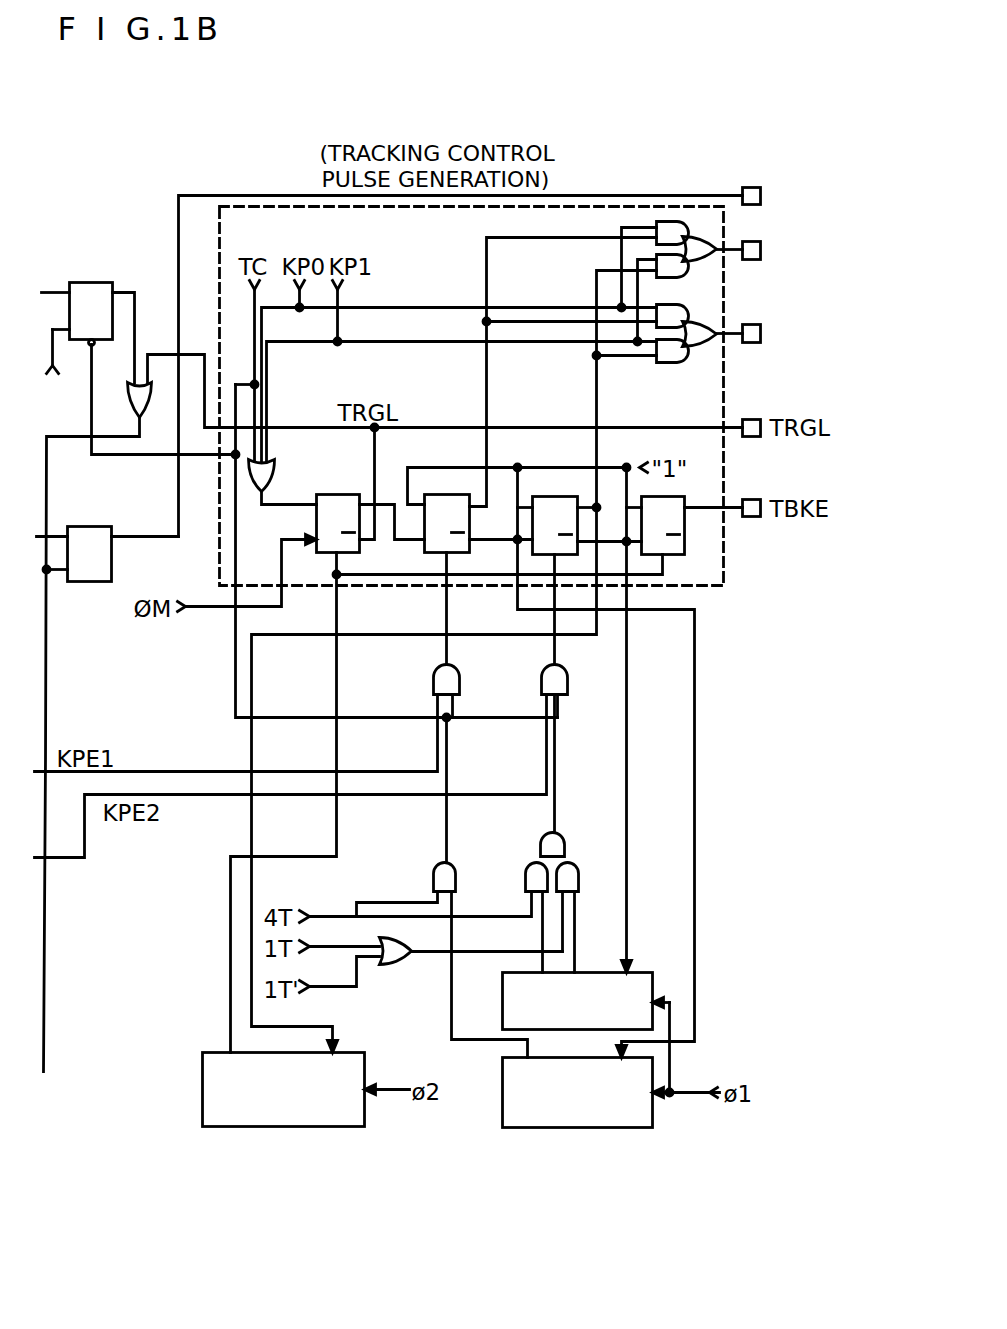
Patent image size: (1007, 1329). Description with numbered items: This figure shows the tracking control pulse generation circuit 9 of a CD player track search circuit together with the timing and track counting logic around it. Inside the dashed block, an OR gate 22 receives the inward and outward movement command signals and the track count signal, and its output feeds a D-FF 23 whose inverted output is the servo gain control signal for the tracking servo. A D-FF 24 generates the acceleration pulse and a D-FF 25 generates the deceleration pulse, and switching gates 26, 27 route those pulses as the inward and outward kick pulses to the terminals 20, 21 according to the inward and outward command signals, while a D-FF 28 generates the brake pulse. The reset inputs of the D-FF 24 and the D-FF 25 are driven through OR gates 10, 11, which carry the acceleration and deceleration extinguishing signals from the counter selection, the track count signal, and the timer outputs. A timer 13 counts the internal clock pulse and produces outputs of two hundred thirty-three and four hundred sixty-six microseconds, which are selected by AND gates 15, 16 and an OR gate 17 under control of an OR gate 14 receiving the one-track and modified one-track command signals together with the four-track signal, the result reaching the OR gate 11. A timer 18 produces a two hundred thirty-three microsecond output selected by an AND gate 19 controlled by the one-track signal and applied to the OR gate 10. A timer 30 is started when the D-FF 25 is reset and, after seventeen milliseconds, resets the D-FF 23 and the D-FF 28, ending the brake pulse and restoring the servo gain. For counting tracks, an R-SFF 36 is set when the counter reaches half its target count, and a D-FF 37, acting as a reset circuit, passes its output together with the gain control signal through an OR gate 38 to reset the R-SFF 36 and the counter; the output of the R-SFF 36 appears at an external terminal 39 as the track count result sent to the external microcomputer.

The tracking control pulse generation circuit 9 is at (248, 207).
The OR gate 10 is at (433, 682).
The OR gate 11 is at (567, 685).
The timer 13 is at (640, 973).
The OR gate 14 is at (395, 965).
The AND gate 15 is at (526, 880).
The AND gate 16 is at (578, 866).
The OR gate 17 is at (542, 843).
The timer 18 is at (620, 1128).
The AND gate 19 is at (434, 878).
The terminal 20 is at (753, 262).
The terminal 21 is at (753, 345).
The OR gate 22 is at (272, 478).
The D-FF 23 is at (340, 495).
The D-FF 24 is at (452, 495).
The D-FF 25 is at (560, 497).
The switching gate 26 is at (685, 278).
The switching gate 27 is at (685, 363).
The D-FF 28 is at (688, 520).
The timer 30 is at (330, 1127).
The R-SFF 36 is at (95, 582).
The D-FF 37 is at (95, 283).
The OR gate 38 is at (150, 405).
The external terminal 39 is at (758, 188).